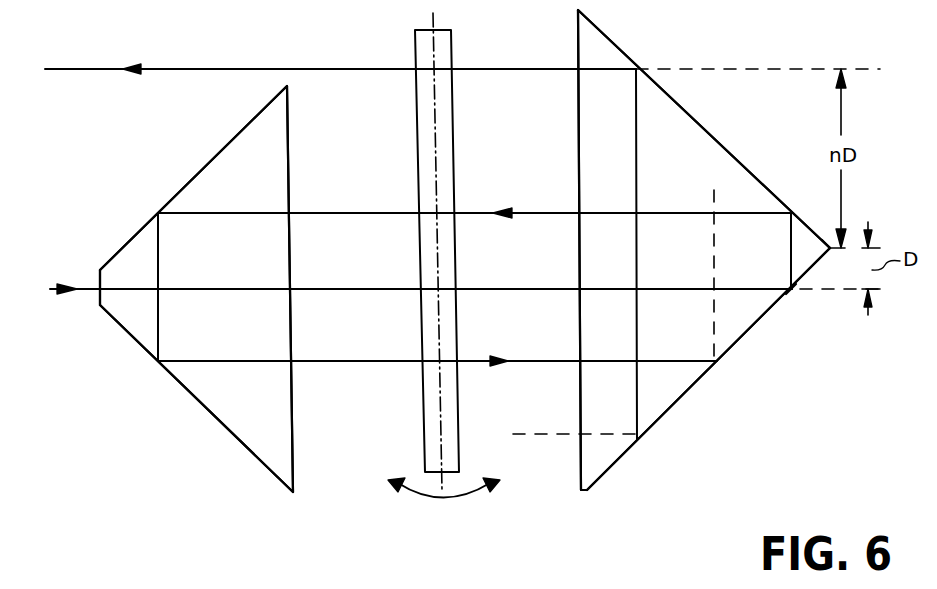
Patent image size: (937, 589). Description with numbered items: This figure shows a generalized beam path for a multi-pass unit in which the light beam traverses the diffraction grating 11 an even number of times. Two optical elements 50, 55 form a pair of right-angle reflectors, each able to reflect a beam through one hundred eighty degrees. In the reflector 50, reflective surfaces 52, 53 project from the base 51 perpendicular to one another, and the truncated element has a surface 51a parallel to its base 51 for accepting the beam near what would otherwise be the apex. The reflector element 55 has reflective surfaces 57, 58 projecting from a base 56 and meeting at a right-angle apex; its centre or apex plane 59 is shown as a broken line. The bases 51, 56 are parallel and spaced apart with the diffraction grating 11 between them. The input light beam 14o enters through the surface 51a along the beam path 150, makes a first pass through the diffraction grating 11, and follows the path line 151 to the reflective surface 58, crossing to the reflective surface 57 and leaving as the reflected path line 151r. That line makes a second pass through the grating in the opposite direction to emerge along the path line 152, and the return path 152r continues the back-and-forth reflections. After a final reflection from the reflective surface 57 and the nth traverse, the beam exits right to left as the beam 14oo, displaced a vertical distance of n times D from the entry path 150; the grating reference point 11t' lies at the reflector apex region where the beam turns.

The diffraction grating 11 is at (418, 456).
The plate thickness reference point 11t' is at (816, 314).
The input light beam 14o is at (92, 288).
The exiting beam 14oo is at (110, 68).
The optical element 50 is at (241, 165).
The base 51 is at (290, 152).
The surface 51a is at (98, 304).
The reflective surface 52 is at (180, 189).
The reflective surface 53 is at (205, 410).
The reflector element 55 is at (690, 148).
The base 56 is at (578, 172).
The reflective surface 57 is at (748, 165).
The reflective surface 58 is at (740, 338).
The centre plane 59 is at (828, 245).
The beam path 150 is at (405, 288).
The path line 151 is at (545, 288).
The reflected path line 151r is at (550, 212).
The path line 152 is at (385, 212).
The lower reflected beam path 152r is at (390, 360).